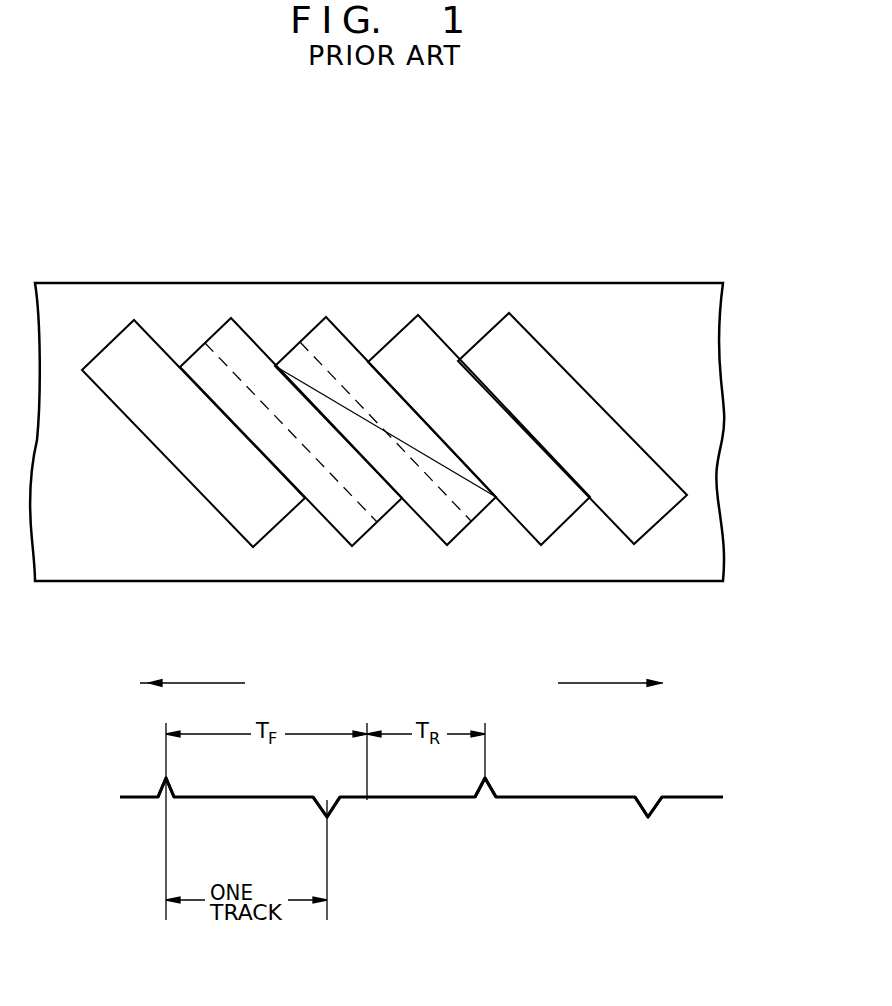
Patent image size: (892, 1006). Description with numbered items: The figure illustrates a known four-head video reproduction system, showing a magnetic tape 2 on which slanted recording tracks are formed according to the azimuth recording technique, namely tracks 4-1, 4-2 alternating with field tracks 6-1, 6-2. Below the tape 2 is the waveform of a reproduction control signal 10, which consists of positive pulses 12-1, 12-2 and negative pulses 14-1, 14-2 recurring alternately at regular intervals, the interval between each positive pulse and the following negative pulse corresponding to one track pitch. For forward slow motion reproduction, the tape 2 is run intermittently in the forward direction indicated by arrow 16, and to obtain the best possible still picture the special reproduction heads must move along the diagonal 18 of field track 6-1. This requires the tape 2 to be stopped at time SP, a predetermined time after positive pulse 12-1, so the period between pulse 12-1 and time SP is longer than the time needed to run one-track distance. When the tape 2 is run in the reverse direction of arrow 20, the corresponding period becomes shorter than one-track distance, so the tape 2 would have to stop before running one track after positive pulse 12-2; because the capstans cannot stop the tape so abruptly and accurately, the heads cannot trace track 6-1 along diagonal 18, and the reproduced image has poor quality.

The magnetic tape 2 is at (650, 282).
The recording track 4-1 is at (362, 537).
The recording track 4-2 is at (553, 537).
The field track 6-1 is at (457, 537).
The field track 6-2 is at (638, 538).
The diagonal 18 is at (232, 366).
The forward direction arrow 16 is at (212, 683).
The reverse direction arrow 20 is at (606, 683).
The reproduction control signal 10 is at (130, 799).
The positive pulse 12-1 is at (158, 796).
The positive pulse 12-2 is at (490, 792).
The negative pulse 14-1 is at (339, 801).
The negative pulse 14-2 is at (652, 810).
The stop time SP is at (368, 800).